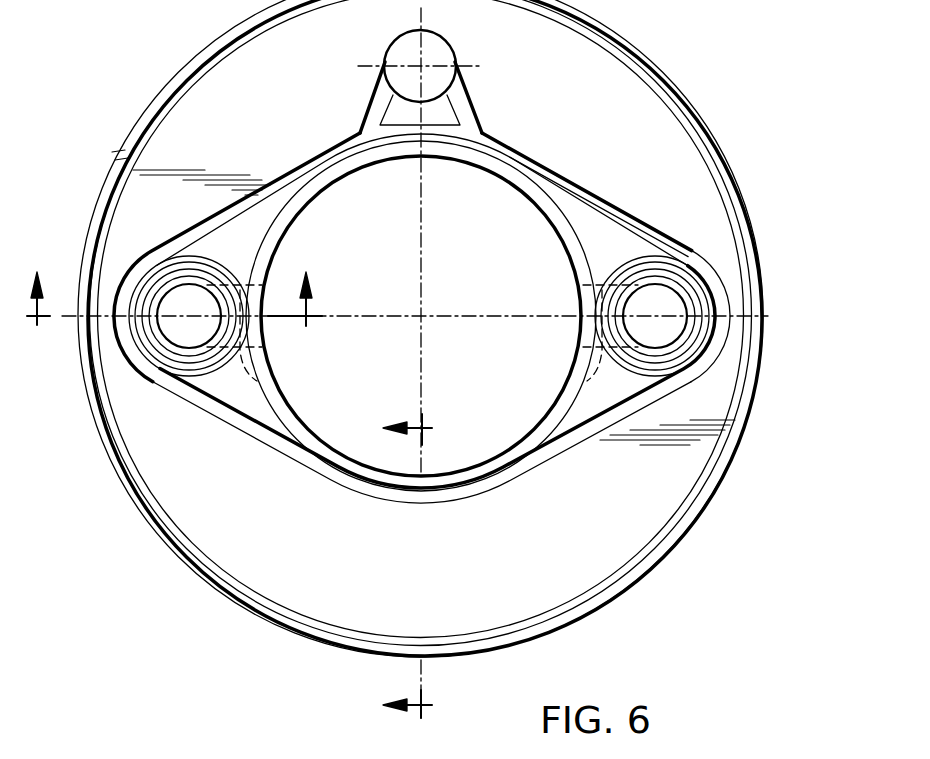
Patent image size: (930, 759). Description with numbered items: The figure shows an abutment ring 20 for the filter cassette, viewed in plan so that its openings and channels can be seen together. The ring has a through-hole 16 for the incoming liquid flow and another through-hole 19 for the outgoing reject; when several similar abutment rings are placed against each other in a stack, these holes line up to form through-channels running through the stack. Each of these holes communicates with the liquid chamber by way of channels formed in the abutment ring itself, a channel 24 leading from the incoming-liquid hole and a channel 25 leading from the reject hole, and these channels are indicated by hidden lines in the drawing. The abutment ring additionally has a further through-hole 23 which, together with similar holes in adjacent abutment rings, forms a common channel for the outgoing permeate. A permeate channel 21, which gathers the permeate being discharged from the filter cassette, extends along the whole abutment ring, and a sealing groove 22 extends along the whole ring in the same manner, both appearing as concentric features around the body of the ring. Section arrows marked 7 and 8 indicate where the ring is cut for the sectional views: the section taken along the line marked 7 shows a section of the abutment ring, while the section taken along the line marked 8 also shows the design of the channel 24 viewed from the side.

The section line 7- 7 is at (421, 569).
The section line 8- 8 is at (174, 315).
The through-hole 16 is at (183, 297).
The through-hole 19 is at (670, 302).
The abutment ring 20 is at (737, 109).
The permeate channel 21 is at (292, 177).
The sealing groove 22 is at (143, 492).
The through-hole 23 is at (442, 49).
The channel 24 is at (262, 383).
The channel 25 is at (583, 375).